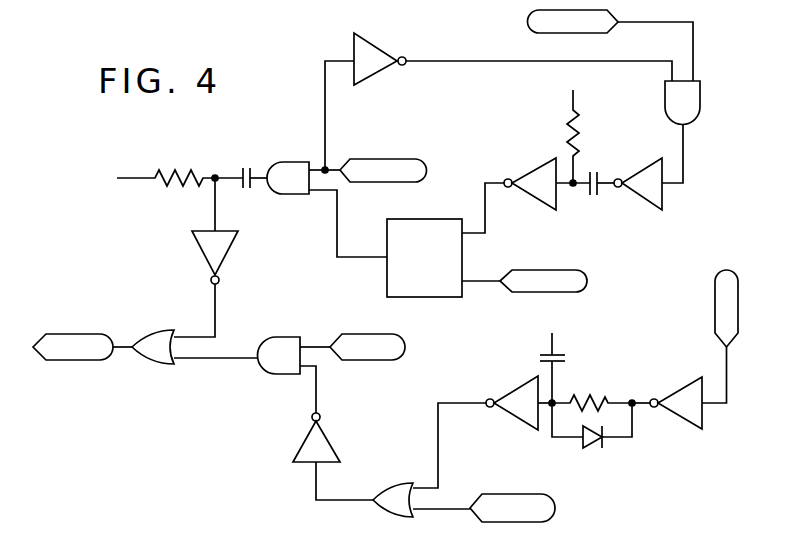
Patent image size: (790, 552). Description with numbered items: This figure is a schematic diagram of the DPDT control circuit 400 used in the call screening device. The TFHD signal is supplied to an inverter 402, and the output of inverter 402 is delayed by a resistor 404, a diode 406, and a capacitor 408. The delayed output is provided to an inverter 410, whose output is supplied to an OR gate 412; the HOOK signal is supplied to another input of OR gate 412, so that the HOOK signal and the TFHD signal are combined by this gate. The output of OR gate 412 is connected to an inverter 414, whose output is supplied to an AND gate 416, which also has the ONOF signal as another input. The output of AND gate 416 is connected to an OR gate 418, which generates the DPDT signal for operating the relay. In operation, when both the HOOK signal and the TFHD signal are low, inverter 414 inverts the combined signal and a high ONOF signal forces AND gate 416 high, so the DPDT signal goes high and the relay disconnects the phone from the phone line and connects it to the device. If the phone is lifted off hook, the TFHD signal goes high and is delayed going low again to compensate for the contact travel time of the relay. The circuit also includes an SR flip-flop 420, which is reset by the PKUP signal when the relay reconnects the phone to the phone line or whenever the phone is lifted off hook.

The DPDT control circuit 400 is at (385, 266).
The inverter 402 is at (677, 380).
The resistor 404 is at (596, 393).
The diode 406 is at (591, 446).
The capacitor 408 is at (560, 356).
The inverter 410 is at (517, 385).
The OR gate 412 is at (378, 483).
The inverter 414 is at (334, 447).
The AND gate 416 is at (272, 333).
The OR gate 418 is at (147, 332).
The SR flip-flop 420 is at (412, 219).